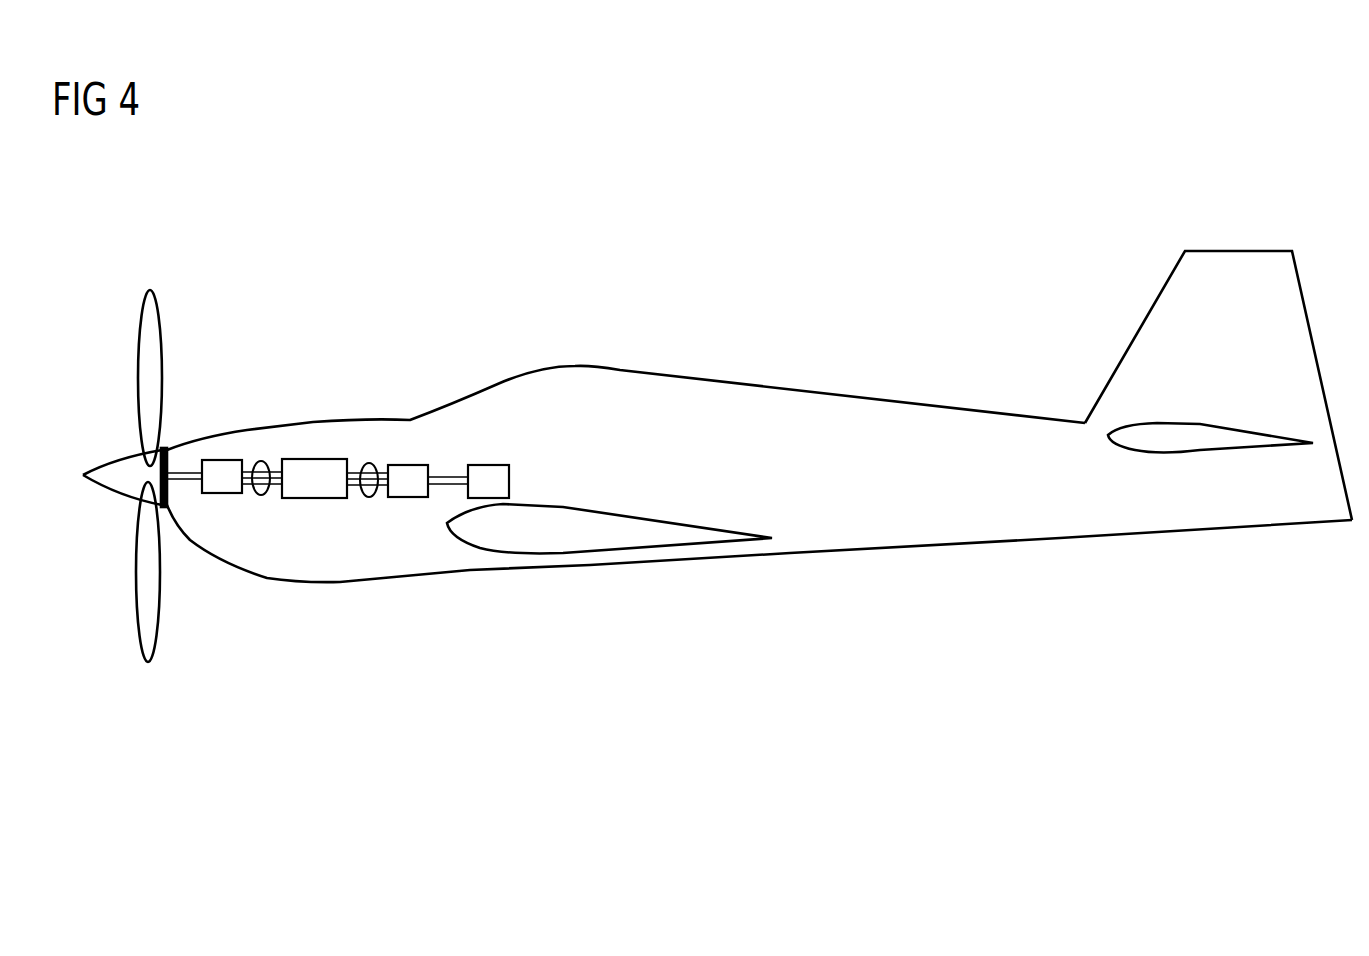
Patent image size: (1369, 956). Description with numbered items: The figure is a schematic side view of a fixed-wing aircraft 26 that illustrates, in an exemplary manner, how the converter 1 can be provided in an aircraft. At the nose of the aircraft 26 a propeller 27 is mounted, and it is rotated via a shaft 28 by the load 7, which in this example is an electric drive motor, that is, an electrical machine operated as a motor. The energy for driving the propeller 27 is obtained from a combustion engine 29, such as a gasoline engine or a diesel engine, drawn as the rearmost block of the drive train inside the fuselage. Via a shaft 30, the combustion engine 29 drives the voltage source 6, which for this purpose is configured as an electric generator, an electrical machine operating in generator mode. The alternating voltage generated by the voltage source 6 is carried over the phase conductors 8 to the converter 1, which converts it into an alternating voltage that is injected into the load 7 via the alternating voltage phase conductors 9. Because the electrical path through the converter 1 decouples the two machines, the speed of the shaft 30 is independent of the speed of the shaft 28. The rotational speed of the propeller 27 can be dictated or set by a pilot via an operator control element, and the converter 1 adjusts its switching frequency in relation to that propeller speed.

The converter 1 is at (316, 459).
The voltage source 6 is at (403, 465).
The load 7 is at (223, 460).
The phase conductors 8 is at (370, 464).
The phase conductors 9 is at (262, 461).
The aircraft 26 is at (837, 393).
The propeller 27 is at (152, 290).
The shaft 28 is at (186, 473).
The combustion engine 29 is at (509, 478).
The shaft 30 is at (445, 477).